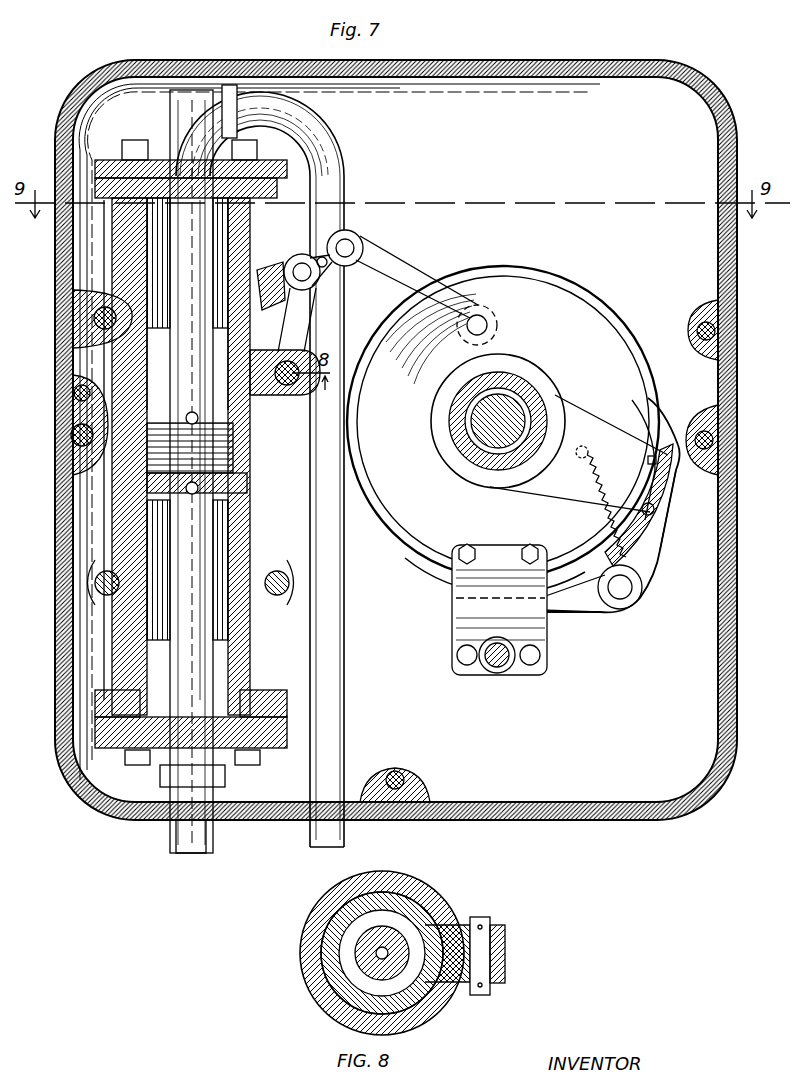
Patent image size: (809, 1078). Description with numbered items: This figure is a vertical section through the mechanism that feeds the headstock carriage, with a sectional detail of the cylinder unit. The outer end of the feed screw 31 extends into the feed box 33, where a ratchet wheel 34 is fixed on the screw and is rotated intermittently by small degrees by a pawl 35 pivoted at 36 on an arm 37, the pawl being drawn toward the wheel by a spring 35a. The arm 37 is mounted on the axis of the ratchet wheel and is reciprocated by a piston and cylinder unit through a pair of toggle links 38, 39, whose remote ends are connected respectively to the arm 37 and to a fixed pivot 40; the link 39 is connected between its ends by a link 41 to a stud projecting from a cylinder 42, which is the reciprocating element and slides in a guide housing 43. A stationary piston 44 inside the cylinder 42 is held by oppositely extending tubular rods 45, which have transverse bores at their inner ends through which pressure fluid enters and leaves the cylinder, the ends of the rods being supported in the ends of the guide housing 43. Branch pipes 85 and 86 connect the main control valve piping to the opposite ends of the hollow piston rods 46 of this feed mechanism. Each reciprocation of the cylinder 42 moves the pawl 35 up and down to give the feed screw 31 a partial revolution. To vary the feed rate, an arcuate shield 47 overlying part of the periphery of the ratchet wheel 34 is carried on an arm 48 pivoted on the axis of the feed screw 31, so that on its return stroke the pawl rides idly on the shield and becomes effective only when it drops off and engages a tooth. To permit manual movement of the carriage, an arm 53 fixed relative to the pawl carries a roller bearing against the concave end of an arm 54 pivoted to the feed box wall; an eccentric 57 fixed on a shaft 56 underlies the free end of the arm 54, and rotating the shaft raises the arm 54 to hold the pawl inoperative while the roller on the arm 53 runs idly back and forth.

In FIG. 7, the feed screw 31 is at (470, 447).
In FIG. 7, the feed box 33 is at (666, 812).
In FIG. 7, the ratchet wheel 34 is at (582, 282).
In FIG. 7, the pawl 35 is at (666, 492).
In FIG. 7, the spring 35a is at (590, 462).
In FIG. 7, the pivot 36 is at (626, 593).
In FIG. 7, the arm 37 is at (662, 568).
In FIG. 7, the toggle link 38 is at (394, 264).
In FIG. 7, the toggle link 39 is at (272, 262).
In FIG. 7, the fixed pivot 40 is at (258, 398).
In FIG. 7, the link 41 is at (322, 296).
In FIG. 8, the link 41 is at (505, 947).
In FIG. 7, the cylinder 42 is at (252, 446).
In FIG. 8, the cylinder 42 is at (322, 940).
In FIG. 7, the guide housing 43 is at (135, 522).
In FIG. 8, the guide housing 43 is at (312, 990).
In FIG. 7, the stationary piston 44 is at (252, 480).
In FIG. 7, the rods 45 is at (185, 232).
In FIG. 8, the rods 45 is at (390, 945).
In FIG. 7, the hollow piston rods 46 is at (188, 490).
In FIG. 7, the arcuate shield 47 is at (668, 432).
In FIG. 7, the arm 48 is at (606, 428).
In FIG. 7, the arm 53 is at (574, 602).
In FIG. 7, the arm 54 is at (456, 638).
In FIG. 7, the shaft 56 is at (490, 670).
In FIG. 7, the eccentric 57 is at (508, 668).
In FIG. 7, the branch pipe 85 is at (190, 855).
In FIG. 7, the branch pipe 86 is at (345, 605).